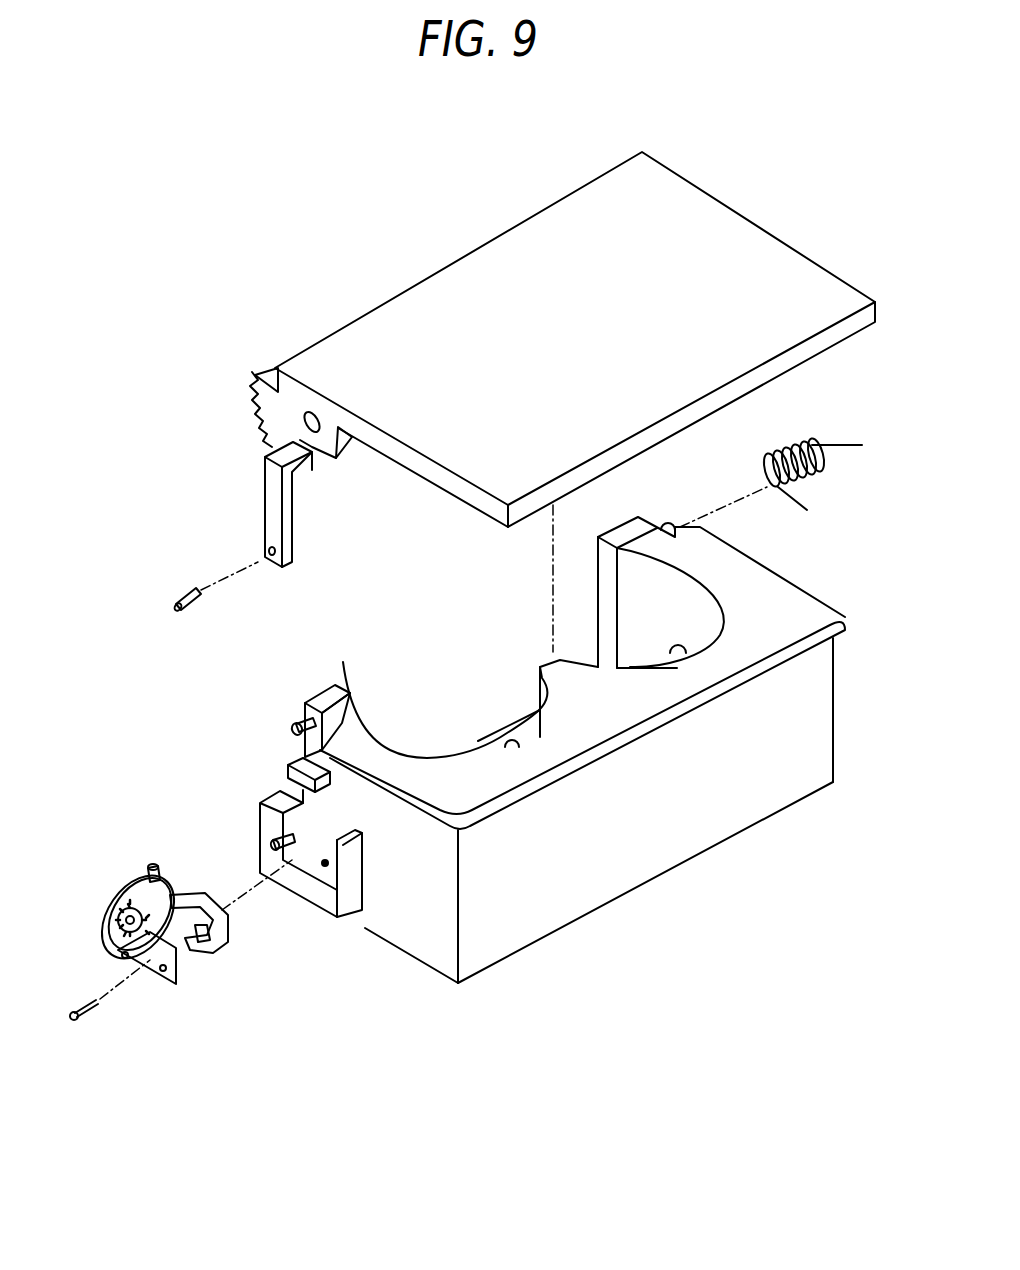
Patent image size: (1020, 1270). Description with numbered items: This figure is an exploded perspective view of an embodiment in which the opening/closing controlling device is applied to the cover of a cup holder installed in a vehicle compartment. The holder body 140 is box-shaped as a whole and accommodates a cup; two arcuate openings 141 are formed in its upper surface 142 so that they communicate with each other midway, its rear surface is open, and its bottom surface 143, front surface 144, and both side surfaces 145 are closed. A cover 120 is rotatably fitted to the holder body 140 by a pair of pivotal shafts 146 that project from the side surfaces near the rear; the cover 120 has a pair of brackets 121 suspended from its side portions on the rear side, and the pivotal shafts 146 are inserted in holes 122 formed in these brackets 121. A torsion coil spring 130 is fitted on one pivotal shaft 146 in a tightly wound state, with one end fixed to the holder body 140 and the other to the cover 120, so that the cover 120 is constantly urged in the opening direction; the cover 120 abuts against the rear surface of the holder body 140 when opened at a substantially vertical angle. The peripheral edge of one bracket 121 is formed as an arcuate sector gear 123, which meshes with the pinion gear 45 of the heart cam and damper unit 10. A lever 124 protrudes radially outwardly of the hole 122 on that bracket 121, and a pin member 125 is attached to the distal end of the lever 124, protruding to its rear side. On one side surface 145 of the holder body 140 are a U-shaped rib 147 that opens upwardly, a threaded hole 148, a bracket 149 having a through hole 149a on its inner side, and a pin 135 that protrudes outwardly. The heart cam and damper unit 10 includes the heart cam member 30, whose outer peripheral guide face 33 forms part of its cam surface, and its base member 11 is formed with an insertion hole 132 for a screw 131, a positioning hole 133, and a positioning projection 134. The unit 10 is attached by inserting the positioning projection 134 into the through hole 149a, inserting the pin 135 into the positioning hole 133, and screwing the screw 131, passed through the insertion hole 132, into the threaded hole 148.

The heart cam and damper unit 10 is at (186, 938).
The base member 11 is at (150, 990).
The heart cam member 30 is at (238, 944).
The outer peripheral guide face 33 is at (228, 950).
The pinion gear 45 is at (124, 905).
The cover 120 is at (670, 222).
The bracket 121 is at (341, 458).
The hole 122 is at (316, 412).
The arcuate sector gear 123 is at (250, 406).
The lever 124 is at (265, 514).
The pin member 125 is at (183, 612).
The torsion coil spring 130 is at (791, 440).
The screw 131 is at (80, 1020).
The insertion hole 132 is at (166, 972).
The positioning hole 133 is at (125, 957).
The positioning projection 134 is at (151, 865).
The pin 135 is at (272, 857).
The holder body 140 is at (525, 766).
The arcuate opening 141 is at (678, 657).
The upper surface 142 is at (795, 592).
The bottom surface 143 is at (462, 742).
The front surface 144 is at (612, 885).
The side surface 145 is at (437, 955).
The pivotal shaft 146 is at (670, 518).
The U-shaped rib 147 is at (323, 912).
The threaded hole 148 is at (330, 868).
The bracket 149 is at (296, 721).
The through hole 149a is at (320, 756).